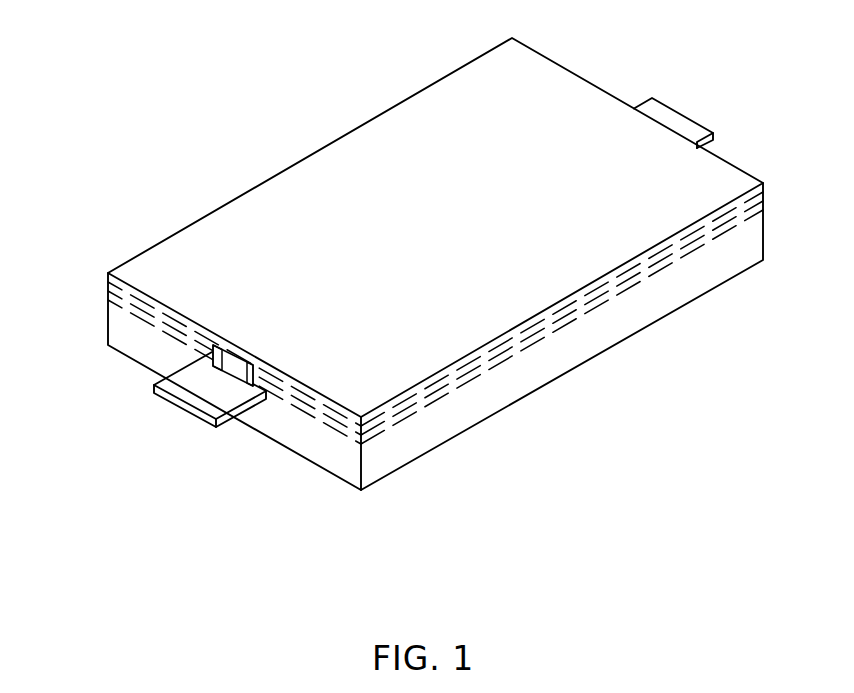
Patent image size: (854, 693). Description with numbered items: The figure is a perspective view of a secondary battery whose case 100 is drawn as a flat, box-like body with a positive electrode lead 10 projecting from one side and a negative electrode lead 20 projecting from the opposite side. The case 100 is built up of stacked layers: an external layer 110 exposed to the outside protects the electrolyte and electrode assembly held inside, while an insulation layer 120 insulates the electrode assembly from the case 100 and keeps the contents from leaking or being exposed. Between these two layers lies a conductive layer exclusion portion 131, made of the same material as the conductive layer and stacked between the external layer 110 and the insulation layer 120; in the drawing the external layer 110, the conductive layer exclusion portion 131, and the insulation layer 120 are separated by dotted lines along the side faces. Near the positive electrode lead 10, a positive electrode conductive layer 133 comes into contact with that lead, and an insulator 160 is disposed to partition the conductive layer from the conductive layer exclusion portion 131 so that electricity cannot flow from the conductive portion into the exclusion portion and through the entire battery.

The case 100 is at (311, 131).
The external layer 110 is at (108, 273).
The insulation layer 120 is at (108, 296).
The conductive layer exclusion portion 131 is at (108, 284).
The positive electrode conductive layer 133 is at (238, 357).
The insulator 160 is at (251, 379).
The positive electrode lead 10 is at (209, 419).
The negative electrode lead 20 is at (686, 115).